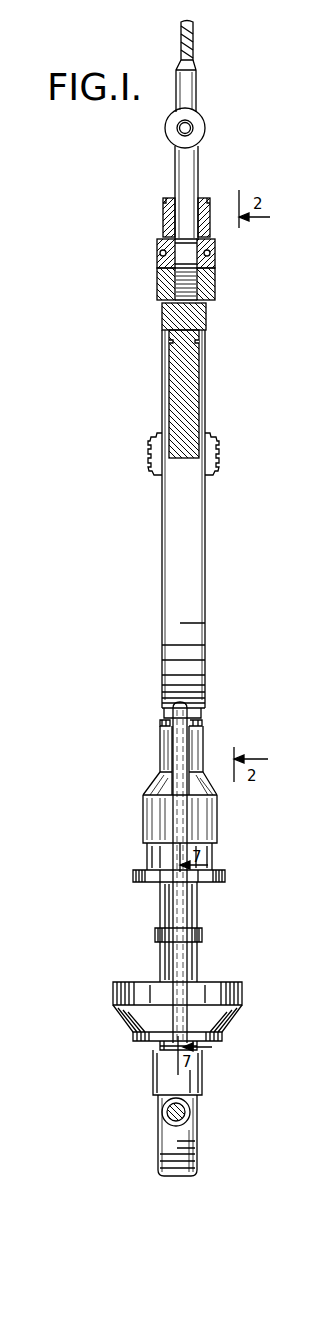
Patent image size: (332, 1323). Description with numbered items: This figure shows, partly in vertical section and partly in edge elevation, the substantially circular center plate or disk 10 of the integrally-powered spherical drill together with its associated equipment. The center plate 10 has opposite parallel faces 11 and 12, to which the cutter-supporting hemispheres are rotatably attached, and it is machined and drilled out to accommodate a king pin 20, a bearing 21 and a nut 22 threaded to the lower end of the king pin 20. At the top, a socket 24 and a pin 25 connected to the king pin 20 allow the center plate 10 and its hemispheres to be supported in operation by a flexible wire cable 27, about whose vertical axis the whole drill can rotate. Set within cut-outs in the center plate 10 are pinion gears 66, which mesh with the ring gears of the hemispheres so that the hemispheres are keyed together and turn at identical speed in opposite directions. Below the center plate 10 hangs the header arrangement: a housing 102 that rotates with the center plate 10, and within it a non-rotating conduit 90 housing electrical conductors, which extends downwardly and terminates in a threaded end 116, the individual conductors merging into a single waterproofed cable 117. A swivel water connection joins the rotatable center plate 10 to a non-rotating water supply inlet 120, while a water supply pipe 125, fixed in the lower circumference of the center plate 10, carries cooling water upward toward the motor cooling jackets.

The center plate 10 is at (188, 505).
The face 11 is at (206, 590).
The face 12 is at (160, 590).
The king pin 20 is at (178, 173).
The bearing 21 is at (157, 243).
The nut 22 is at (157, 281).
The socket 24 is at (190, 93).
The pin 25 is at (194, 128).
The flexible wire cable 27 is at (194, 42).
The pinion gears 66 is at (148, 455).
The non-rotating conduit 90 is at (192, 905).
The housing 102 is at (150, 857).
The threaded end 116 is at (163, 1046).
The waterproofed cable 117 is at (190, 1113).
The water supply inlet 120 is at (166, 1140).
The water supply pipe 125 is at (180, 748).